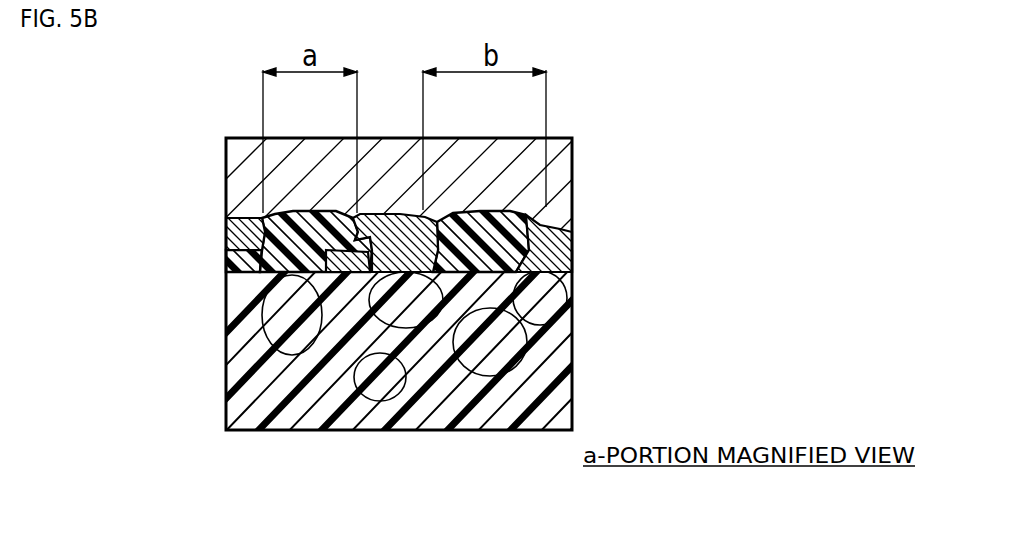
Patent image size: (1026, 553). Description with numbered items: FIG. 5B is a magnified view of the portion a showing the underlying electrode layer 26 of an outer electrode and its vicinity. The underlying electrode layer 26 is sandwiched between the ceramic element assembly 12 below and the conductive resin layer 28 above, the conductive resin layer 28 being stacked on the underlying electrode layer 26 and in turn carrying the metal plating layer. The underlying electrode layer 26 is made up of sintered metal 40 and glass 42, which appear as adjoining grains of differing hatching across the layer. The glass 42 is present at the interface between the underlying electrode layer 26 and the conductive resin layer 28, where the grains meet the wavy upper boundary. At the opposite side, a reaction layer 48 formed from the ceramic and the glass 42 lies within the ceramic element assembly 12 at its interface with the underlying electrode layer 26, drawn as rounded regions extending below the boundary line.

The ceramic element assembly 12 is at (580, 272).
The underlying electrode layer 26 is at (393, 185).
The conductive resin layer 28 is at (580, 138).
The sintered metal 40 is at (382, 220).
The glass 42 is at (297, 227).
The reaction layer 48 is at (268, 317).